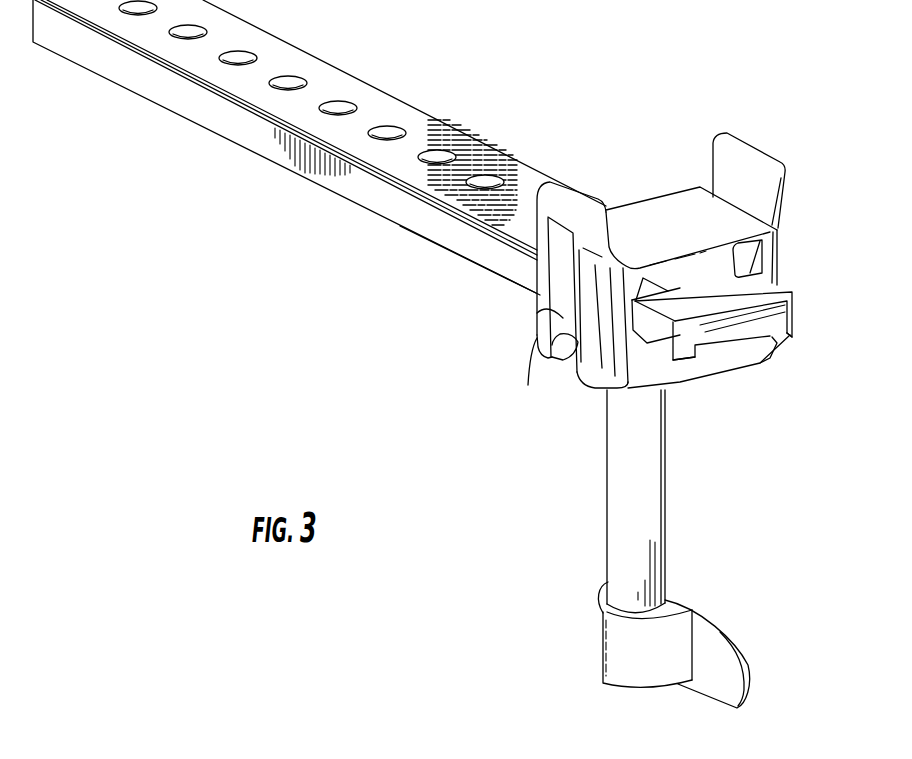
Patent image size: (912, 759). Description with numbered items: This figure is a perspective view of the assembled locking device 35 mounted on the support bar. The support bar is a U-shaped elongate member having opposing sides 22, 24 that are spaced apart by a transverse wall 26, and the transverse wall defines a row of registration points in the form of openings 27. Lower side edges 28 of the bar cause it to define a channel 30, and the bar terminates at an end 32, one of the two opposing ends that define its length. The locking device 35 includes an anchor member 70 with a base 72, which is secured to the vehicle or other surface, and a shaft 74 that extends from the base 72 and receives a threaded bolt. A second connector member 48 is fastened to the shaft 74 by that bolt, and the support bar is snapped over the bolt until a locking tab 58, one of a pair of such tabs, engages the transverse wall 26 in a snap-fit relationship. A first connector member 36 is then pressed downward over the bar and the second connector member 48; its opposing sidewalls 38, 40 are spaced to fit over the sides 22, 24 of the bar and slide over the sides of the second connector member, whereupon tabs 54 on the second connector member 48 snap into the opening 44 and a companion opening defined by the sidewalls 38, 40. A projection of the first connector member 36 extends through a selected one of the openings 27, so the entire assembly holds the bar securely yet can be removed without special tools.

The opposing side 22 is at (797, 298).
The opposing side 24 is at (520, 265).
The transverse wall 26 is at (330, 73).
The openings 27 is at (267, 78).
The lower side edges 28 is at (778, 343).
The channel 30 is at (721, 353).
The end 32 is at (804, 341).
The locking device 35 is at (646, 49).
The first connector member 36 is at (813, 174).
The sidewall 38 is at (778, 265).
The sidewall 40 is at (540, 337).
The opening 44 is at (533, 310).
The second connector member 48 is at (763, 381).
The tabs 54 is at (573, 352).
The locking tab 58 is at (640, 313).
The anchor member 70 is at (707, 563).
The base 72 is at (752, 657).
The shaft 74 is at (666, 510).